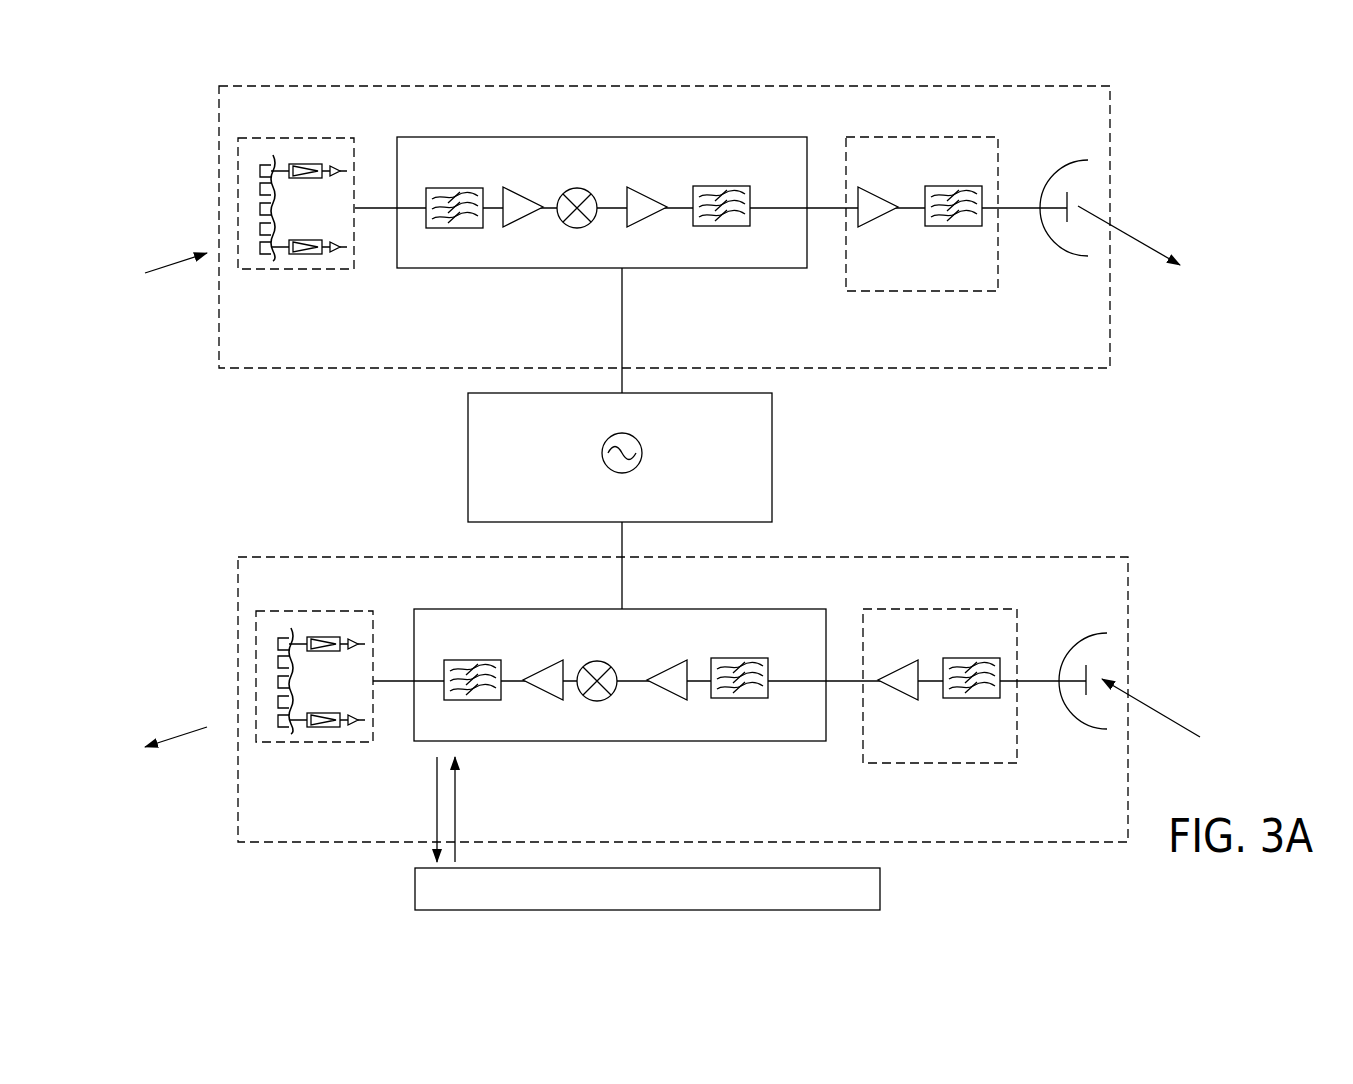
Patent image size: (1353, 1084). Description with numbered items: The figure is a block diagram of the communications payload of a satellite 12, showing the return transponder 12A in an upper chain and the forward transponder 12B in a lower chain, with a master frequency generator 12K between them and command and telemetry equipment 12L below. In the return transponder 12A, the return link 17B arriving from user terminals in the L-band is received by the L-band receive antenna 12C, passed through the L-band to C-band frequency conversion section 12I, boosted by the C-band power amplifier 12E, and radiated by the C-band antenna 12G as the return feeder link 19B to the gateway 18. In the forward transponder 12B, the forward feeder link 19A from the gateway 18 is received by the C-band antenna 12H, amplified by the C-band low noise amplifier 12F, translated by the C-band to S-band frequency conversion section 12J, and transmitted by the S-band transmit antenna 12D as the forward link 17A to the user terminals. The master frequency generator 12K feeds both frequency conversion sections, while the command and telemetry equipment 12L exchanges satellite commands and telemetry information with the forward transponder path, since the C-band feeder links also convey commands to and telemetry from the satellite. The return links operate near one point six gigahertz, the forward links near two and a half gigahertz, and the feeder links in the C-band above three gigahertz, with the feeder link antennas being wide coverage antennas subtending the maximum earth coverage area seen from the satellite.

The satellite 12 is at (710, 505).
The return satellite transponder 12A is at (664, 227).
The forward satellite transponder 12B is at (683, 699).
The L-band receive antenna 12C is at (281, 135).
The S-band transmit antenna 12D is at (299, 610).
The C-band power amplifier 12E is at (870, 291).
The C-band low noise amplifier 12F is at (889, 763).
The C-band antenna 12G is at (1062, 247).
The C-band antenna 12H is at (1080, 720).
The L-band to C-band frequency conversion section 12I is at (487, 269).
The C-band to S-band frequency conversion section 12J is at (492, 609).
The master frequency generator 12K is at (773, 446).
The command and telemetry equipment 12L is at (880, 892).
The forward link 17A is at (168, 738).
The return link 17B is at (168, 265).
The gateway 18 is at (1222, 377).
The forward feeder link 19A is at (1165, 720).
The return feeder link 19B is at (1147, 247).